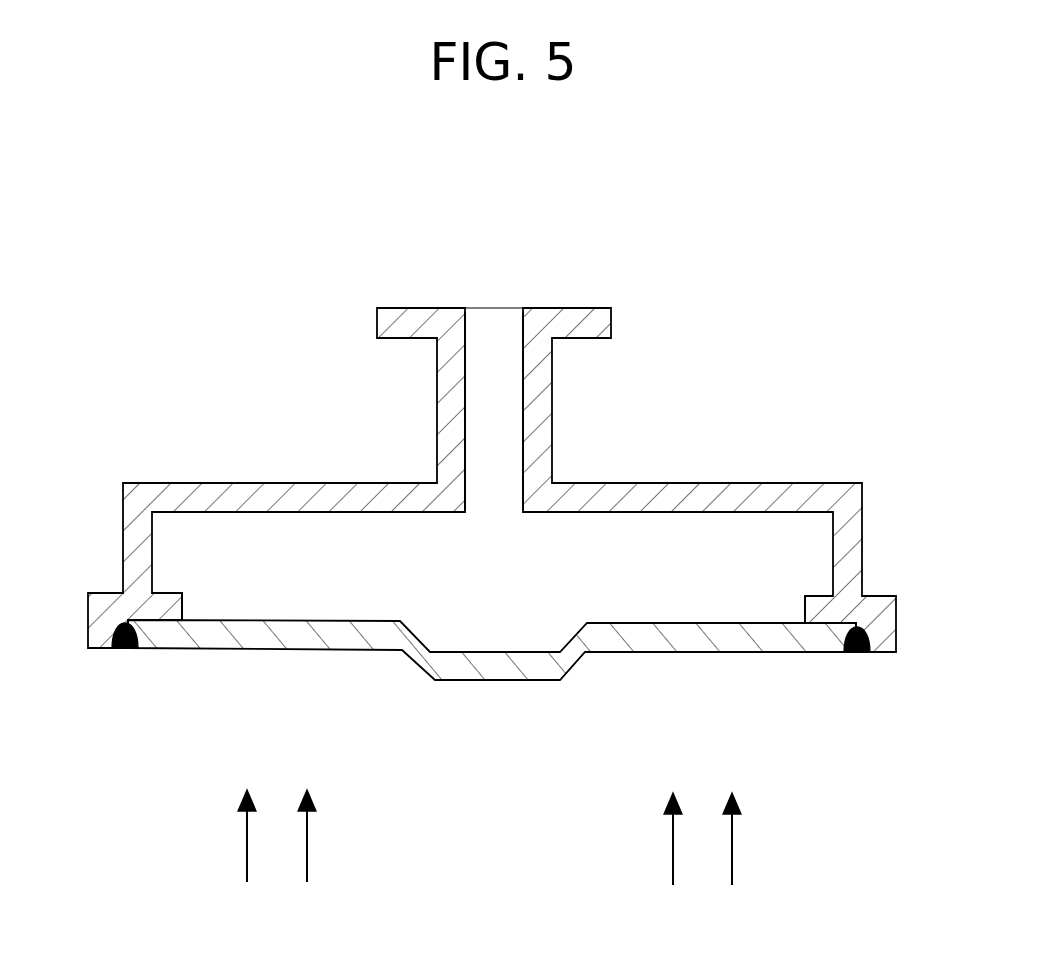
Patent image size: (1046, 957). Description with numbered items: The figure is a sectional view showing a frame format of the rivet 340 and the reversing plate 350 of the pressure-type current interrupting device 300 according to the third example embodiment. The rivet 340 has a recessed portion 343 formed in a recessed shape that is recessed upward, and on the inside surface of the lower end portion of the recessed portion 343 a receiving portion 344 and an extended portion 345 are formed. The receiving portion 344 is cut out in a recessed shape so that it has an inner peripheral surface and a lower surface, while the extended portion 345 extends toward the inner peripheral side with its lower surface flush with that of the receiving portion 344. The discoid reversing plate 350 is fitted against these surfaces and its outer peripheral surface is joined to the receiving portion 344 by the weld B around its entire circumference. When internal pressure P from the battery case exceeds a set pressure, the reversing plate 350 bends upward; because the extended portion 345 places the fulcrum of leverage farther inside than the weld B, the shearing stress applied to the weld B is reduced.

The pressure-type current interrupting device 300 is at (493, 556).
The rivet 340 is at (743, 398).
The recessed portion 343 is at (545, 515).
The receiving portion 344 is at (157, 621).
The extended portion 345 is at (178, 603).
The reversing plate 350 is at (648, 672).
The weld B is at (129, 650).
The internal pressure P is at (489, 860).